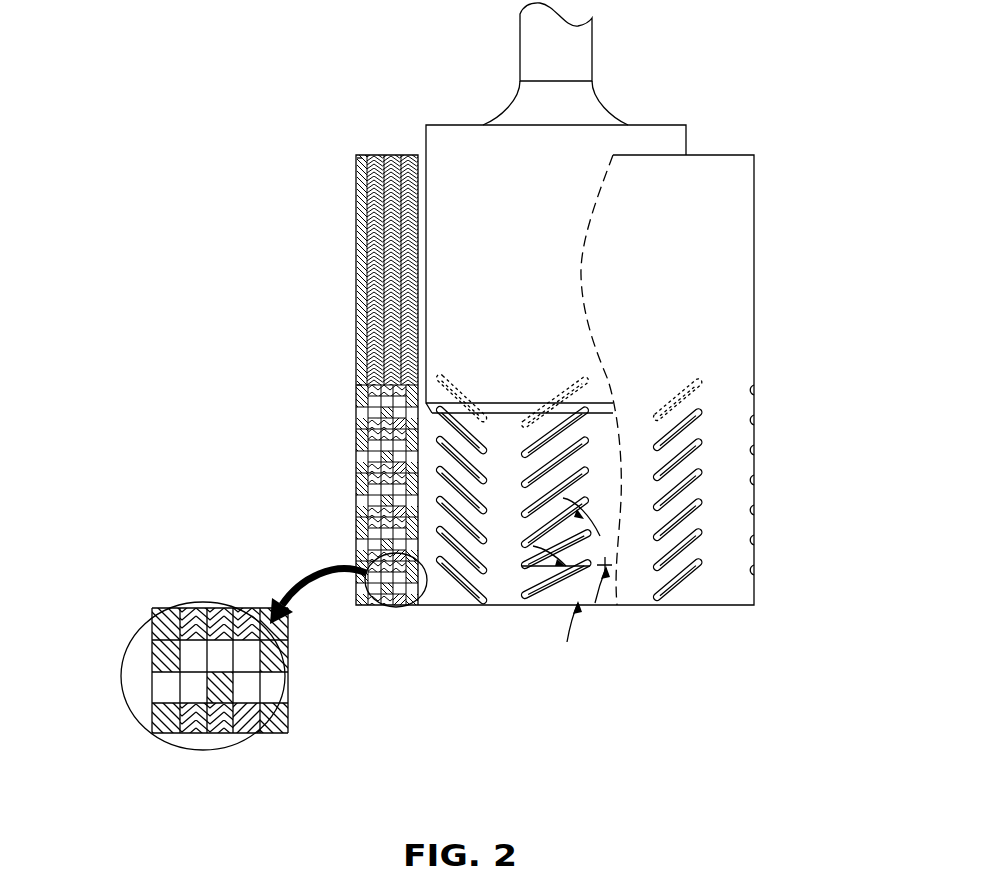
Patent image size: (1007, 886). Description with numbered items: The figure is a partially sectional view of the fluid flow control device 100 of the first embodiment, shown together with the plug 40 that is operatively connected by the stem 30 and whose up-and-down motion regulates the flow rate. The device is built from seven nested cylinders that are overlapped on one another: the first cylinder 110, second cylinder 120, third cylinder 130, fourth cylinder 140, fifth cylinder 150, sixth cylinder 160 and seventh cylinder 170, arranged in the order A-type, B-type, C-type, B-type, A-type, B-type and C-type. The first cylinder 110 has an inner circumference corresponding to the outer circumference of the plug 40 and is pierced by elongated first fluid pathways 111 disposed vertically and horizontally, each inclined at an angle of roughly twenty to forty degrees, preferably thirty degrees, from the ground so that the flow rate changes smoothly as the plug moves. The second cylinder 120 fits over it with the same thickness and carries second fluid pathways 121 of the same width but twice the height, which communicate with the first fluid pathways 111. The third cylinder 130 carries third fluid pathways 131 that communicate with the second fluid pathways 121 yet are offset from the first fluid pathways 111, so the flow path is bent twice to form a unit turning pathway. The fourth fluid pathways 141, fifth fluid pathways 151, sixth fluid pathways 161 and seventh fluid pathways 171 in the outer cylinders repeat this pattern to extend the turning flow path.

The stem 30 is at (584, 50).
The plug 40 is at (668, 125).
The fluid flow control device 100 is at (772, 199).
The first cylinder 110 is at (280, 718).
The first fluid pathway 111 is at (283, 680).
The second cylinder 120 is at (243, 740).
The second fluid pathway 121 is at (247, 653).
The third cylinder 130 is at (213, 727).
The third fluid pathway 131 is at (217, 647).
The fourth cylinder 140 is at (193, 612).
The fourth fluid pathway 141 is at (182, 687).
The fifth cylinder 150 is at (165, 622).
The fifth fluid pathway 151 is at (158, 683).
The sixth cylinder 160 is at (137, 628).
The sixth fluid pathway 161 is at (137, 665).
The seventh cylinder 170 is at (362, 160).
The seventh fluid pathway 171 is at (362, 388).